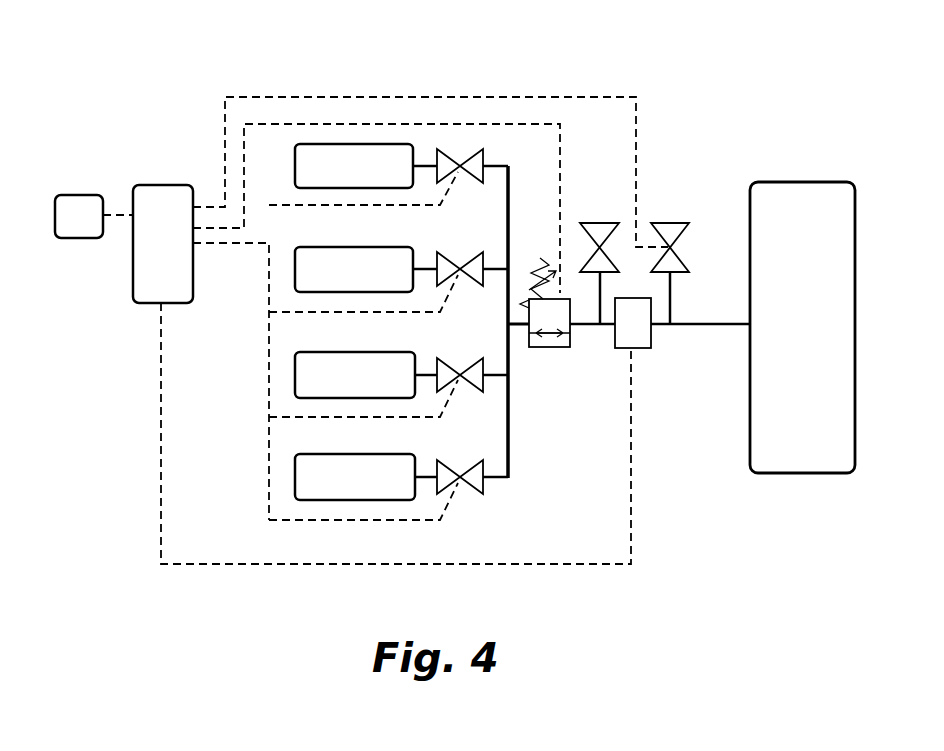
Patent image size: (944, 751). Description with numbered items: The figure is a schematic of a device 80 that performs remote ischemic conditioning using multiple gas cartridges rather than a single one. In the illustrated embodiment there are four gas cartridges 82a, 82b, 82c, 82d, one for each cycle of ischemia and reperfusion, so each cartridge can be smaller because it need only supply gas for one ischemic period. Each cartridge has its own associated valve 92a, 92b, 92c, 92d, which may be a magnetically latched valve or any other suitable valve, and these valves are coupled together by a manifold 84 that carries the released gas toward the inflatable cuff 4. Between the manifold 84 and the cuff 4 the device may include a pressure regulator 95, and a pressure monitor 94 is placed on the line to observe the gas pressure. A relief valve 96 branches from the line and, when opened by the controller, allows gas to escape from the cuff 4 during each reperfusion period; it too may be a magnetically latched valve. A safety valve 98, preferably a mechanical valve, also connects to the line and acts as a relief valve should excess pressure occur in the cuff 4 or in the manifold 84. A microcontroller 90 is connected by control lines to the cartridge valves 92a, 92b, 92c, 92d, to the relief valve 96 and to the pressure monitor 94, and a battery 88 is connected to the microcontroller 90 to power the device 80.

The cuff 4 is at (810, 325).
The device 80 is at (423, 83).
The gas cartridge 82a is at (368, 180).
The gas cartridge 82b is at (368, 283).
The gas cartridge 82c is at (368, 388).
The gas cartridge 82d is at (368, 490).
The manifold 84 is at (511, 433).
The battery 88 is at (78, 195).
The microcontroller 90 is at (172, 257).
The valve 92a is at (470, 179).
The valve 92b is at (472, 283).
The valve 92c is at (472, 389).
The valve 92d is at (472, 491).
The pressure monitor 94 is at (651, 338).
The pressure regulator 95 is at (553, 350).
The relief valve 96 is at (672, 223).
The safety valve 98 is at (600, 223).